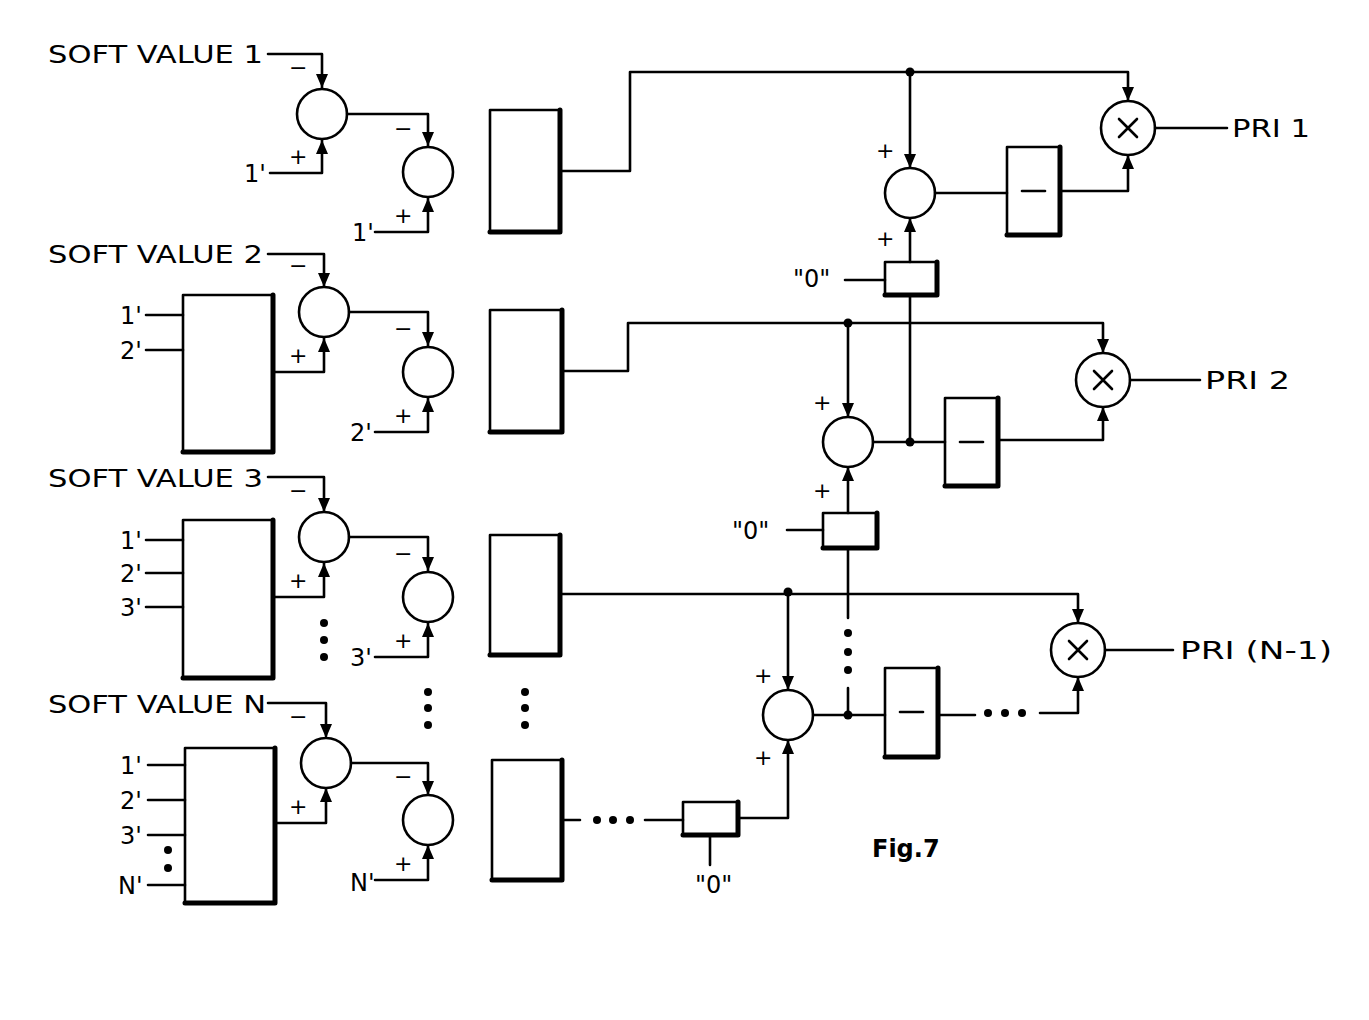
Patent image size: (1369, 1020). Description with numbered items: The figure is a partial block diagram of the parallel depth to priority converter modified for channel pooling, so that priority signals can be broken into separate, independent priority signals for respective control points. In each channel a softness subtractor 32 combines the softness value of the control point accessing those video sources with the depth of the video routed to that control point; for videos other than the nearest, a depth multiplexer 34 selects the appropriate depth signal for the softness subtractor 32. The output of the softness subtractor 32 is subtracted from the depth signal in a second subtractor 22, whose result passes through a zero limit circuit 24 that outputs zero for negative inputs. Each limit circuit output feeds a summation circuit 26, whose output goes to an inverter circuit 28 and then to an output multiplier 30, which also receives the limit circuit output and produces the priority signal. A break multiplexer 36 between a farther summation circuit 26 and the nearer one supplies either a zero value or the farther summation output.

The second subtractor 22 is at (446, 190).
The zero limit circuit 24 is at (532, 110).
The summation circuit 26 is at (885, 190).
The inverter circuit 28 is at (1028, 147).
The output multiplier 30 is at (1148, 147).
The softness subtractor 32 is at (338, 133).
The depth multiplexer 34 is at (183, 425).
The break multiplexer 36 is at (937, 280).